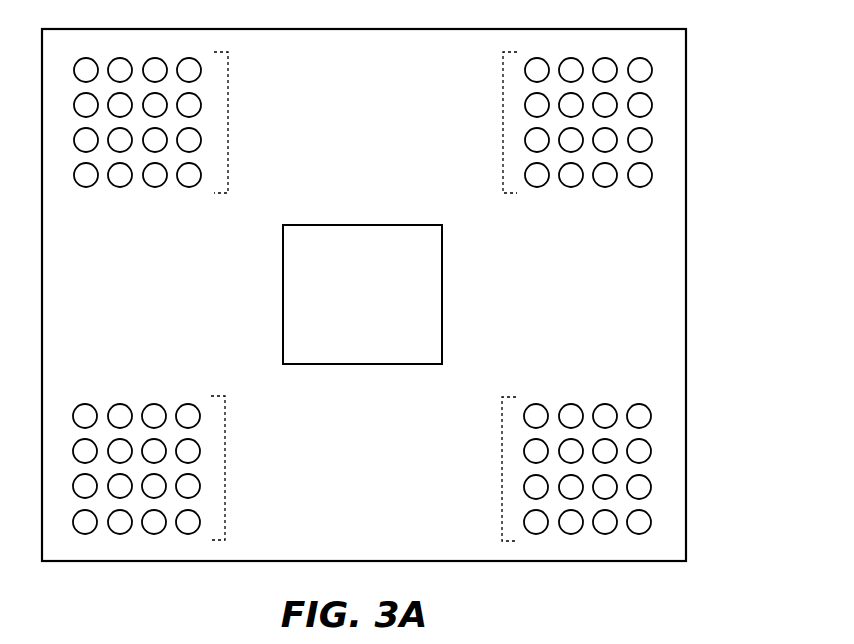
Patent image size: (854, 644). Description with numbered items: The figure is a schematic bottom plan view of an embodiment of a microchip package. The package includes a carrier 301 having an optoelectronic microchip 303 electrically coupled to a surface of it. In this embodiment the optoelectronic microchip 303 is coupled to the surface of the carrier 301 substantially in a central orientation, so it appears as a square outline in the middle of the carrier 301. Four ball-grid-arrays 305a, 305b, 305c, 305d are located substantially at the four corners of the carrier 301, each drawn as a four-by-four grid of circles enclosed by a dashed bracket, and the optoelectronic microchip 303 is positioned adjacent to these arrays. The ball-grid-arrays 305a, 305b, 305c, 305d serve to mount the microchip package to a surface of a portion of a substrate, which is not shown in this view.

The carrier 301 is at (686, 297).
The optoelectronic microchip 303 is at (344, 351).
The ball-grid-array 305a is at (229, 127).
The ball-grid-array 305b is at (503, 115).
The ball-grid-array 305c is at (501, 462).
The ball-grid-array 305d is at (226, 476).